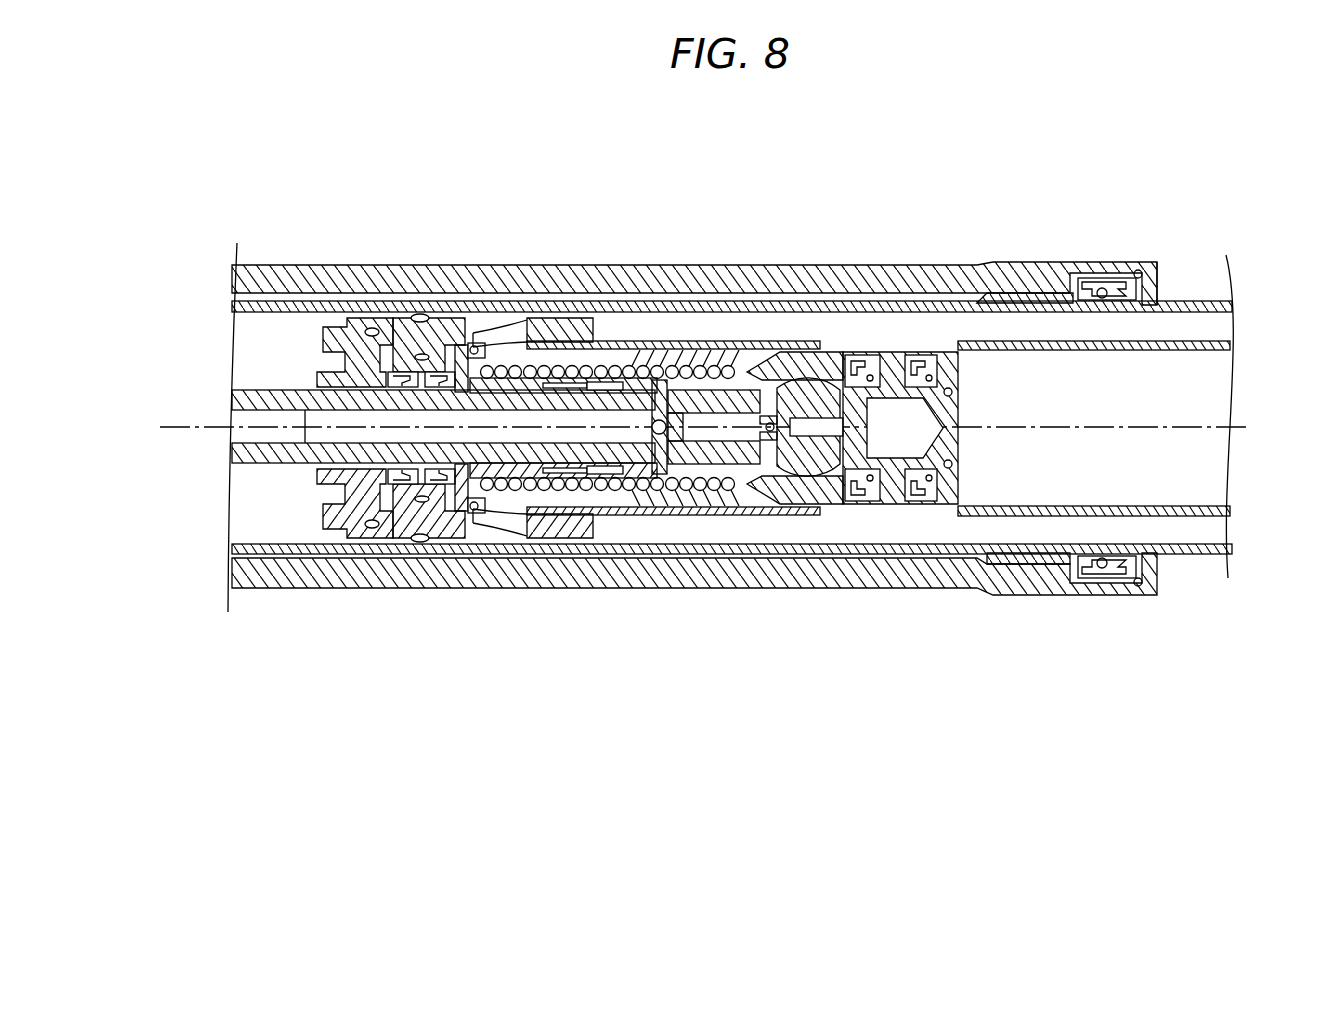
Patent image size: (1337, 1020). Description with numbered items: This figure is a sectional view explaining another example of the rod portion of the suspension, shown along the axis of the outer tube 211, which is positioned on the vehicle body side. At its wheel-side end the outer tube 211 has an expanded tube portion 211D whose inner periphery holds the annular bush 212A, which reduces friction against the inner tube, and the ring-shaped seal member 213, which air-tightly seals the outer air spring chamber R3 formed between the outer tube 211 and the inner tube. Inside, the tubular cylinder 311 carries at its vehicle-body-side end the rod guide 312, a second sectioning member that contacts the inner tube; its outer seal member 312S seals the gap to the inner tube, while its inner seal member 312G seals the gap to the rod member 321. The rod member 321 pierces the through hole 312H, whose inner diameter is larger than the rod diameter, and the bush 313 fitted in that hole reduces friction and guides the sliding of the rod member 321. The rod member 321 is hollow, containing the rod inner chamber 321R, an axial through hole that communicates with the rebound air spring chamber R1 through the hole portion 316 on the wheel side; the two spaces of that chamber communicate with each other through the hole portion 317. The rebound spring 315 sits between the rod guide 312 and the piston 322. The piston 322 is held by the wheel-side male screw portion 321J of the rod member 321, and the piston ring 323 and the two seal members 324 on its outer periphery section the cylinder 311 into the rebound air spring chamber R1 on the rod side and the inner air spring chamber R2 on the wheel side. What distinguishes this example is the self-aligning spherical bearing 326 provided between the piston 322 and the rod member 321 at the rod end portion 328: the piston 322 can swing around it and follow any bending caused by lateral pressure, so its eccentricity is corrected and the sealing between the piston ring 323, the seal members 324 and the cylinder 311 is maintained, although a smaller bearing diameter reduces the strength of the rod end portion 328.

The outer tube 211 is at (388, 265).
The expanded tube portion 211D is at (1164, 278).
The bush 212A is at (1027, 263).
The seal member 213 is at (1116, 290).
The cylinder 311 is at (953, 340).
The rod guide 312 is at (327, 360).
The inner seal member 312G is at (410, 313).
The outer seal member 312S is at (440, 345).
The through hole 312H is at (347, 440).
The bush 313 is at (357, 320).
The rebound spring 315 is at (720, 368).
The hole portion 316 is at (662, 412).
The hole portion 317 is at (487, 527).
The rod member 321 is at (253, 462).
The rod inner chamber 321R is at (307, 433).
The wheel-side male screw portion 321J is at (697, 453).
The piston 322 is at (963, 503).
The piston ring 323 is at (823, 350).
The seal member 324 is at (863, 505).
The spherical bearing 326 is at (797, 360).
The rod end portion 328 is at (750, 443).
The rebound air spring chamber R1 is at (633, 360).
The inner air spring chamber R2 is at (1208, 377).
The outer air spring chamber R3 is at (257, 330).